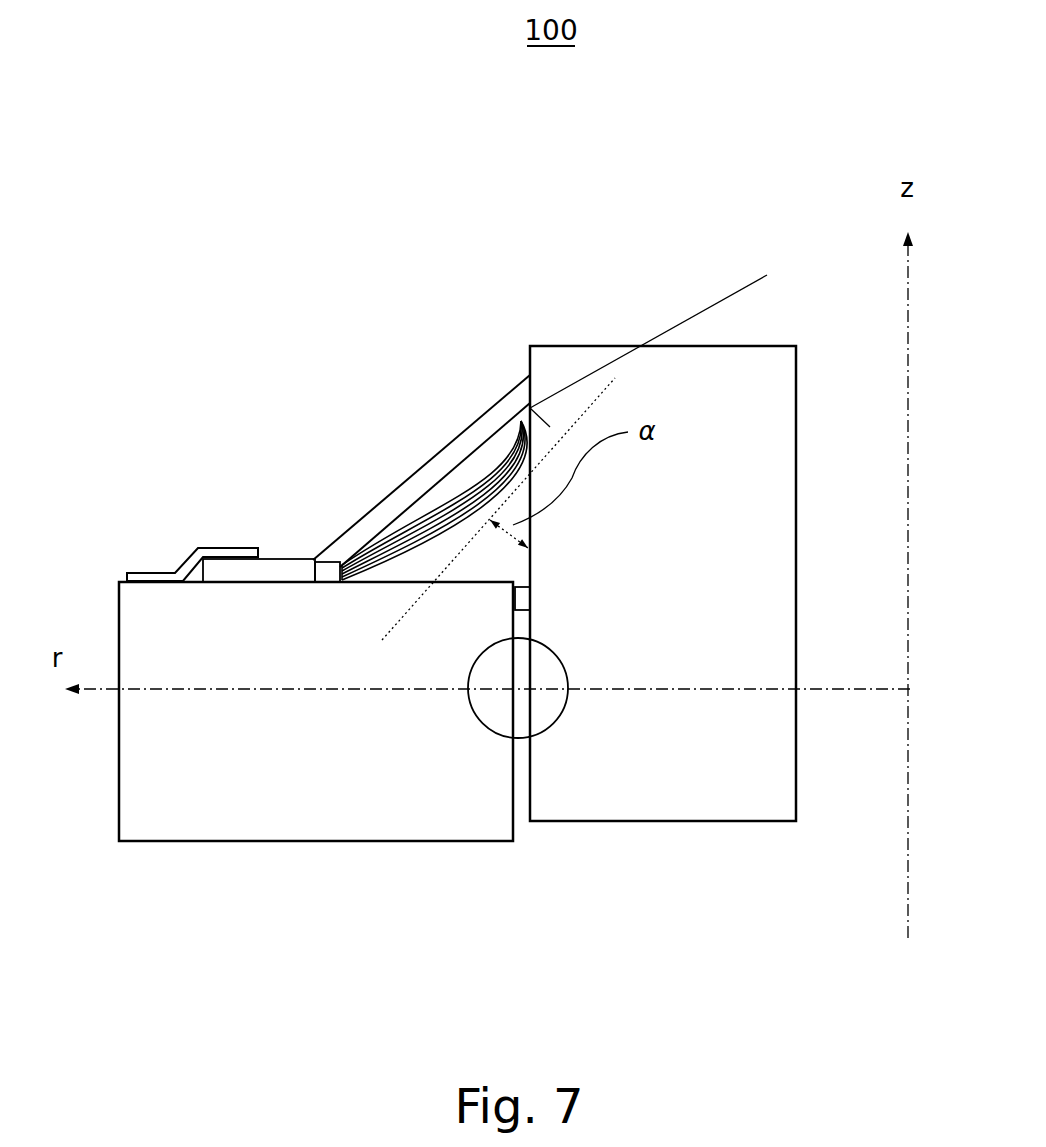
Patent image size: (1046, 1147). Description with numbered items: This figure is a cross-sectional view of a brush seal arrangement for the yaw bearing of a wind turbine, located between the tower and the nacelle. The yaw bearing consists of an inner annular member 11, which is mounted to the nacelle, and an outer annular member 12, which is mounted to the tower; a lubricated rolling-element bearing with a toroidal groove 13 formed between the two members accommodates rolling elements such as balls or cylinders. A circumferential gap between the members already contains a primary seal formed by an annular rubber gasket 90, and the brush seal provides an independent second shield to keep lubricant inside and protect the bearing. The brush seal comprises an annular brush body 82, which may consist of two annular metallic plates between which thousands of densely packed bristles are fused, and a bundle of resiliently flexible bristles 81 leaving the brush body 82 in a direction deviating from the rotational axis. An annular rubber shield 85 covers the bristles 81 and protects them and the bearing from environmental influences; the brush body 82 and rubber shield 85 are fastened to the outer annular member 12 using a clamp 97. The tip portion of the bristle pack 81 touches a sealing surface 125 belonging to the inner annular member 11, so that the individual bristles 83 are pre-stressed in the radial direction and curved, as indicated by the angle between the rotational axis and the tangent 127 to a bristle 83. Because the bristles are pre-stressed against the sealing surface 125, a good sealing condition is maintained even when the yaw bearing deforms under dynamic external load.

The inner annular member 11 is at (675, 788).
The outer annular member 12 is at (248, 773).
The toroidal groove 13 is at (518, 680).
The bundle of resiliently flexible bristles 81 is at (428, 521).
The annular brush body 82 is at (313, 557).
The individual bristle 83 is at (470, 500).
The annular rubber shield 85 is at (477, 430).
The annular rubber gasket 90 is at (520, 598).
The clamp 97 is at (160, 570).
The sealing surface 125 is at (682, 341).
The tangent 127 is at (403, 618).